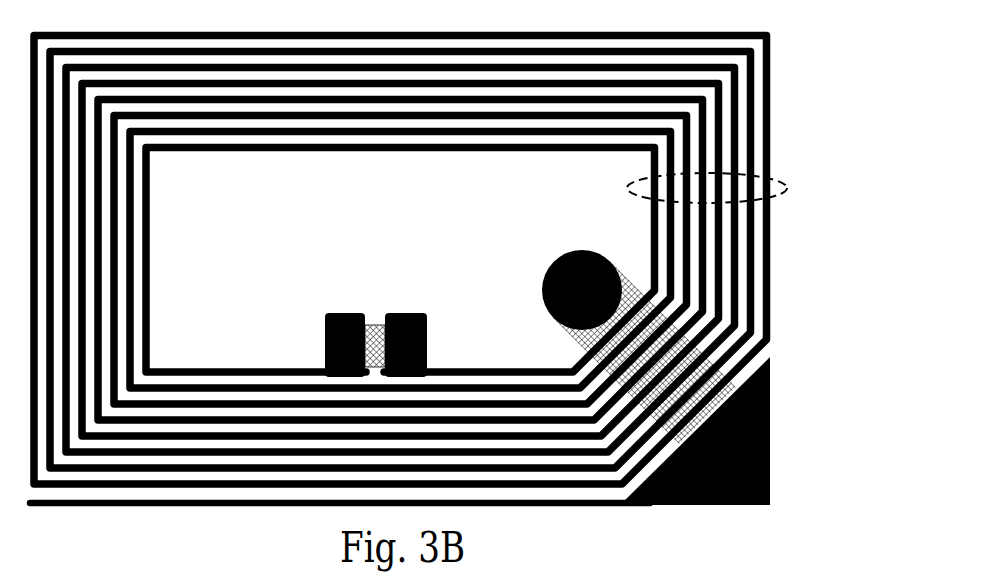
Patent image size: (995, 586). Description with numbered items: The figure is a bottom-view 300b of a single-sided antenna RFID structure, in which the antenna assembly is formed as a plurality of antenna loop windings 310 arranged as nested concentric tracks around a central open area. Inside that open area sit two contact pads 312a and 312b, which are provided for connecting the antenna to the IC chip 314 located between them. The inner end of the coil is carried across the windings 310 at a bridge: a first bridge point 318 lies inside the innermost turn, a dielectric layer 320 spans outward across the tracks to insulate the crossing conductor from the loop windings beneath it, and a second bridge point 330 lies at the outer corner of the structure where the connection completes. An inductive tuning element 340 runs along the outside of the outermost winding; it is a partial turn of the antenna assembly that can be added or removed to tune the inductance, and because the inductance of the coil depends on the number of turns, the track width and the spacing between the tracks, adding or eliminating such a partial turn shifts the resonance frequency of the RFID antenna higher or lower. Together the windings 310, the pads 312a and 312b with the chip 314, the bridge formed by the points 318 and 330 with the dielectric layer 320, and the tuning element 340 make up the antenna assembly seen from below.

The bottom-view 300b is at (437, 260).
The antenna loop windings 310 is at (789, 187).
The contact pad 312a is at (427, 348).
The contact pad 312b is at (333, 313).
The IC chip 314 is at (378, 323).
The bridge point 318 is at (577, 251).
The dielectric layer 320 is at (640, 283).
The bridge point 330 is at (680, 507).
The inductive tuning element 340 is at (133, 506).